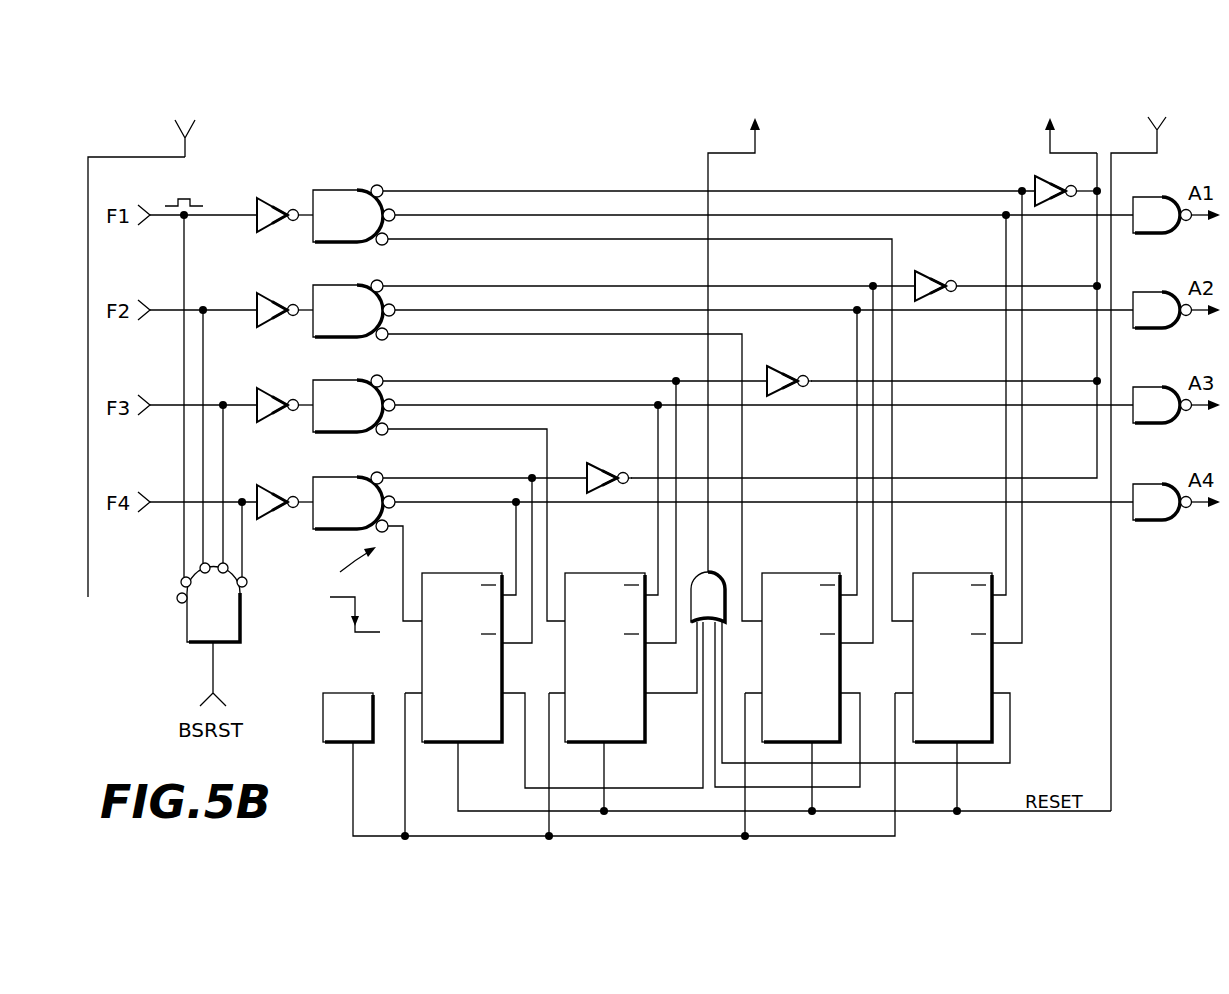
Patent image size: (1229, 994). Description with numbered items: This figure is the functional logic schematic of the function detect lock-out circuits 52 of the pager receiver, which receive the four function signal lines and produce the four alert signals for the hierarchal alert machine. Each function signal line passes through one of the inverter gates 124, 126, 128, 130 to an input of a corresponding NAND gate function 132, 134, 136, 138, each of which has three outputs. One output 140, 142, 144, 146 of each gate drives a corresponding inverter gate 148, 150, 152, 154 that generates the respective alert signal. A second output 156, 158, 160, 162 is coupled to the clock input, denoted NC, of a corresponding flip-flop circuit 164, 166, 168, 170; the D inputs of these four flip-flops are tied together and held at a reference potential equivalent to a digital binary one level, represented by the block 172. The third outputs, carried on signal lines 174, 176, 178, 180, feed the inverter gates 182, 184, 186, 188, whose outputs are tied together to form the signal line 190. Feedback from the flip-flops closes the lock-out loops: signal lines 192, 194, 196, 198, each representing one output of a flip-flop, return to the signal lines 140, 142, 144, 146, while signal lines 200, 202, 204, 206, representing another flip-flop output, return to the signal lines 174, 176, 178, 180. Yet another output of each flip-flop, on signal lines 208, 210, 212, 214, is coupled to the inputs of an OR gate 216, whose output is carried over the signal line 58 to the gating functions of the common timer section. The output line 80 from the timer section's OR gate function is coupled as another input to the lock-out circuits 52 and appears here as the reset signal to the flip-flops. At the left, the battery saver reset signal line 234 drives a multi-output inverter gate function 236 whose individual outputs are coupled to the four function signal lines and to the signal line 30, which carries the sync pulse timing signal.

The signal line 30 is at (190, 140).
The function detect lock-out circuits 52 is at (342, 567).
The signal line 58 is at (758, 151).
The output line 80 is at (1057, 812).
The inverter gate 124 is at (279, 198).
The inverter gate 126 is at (279, 293).
The inverter gate 128 is at (279, 390).
The inverter gate 130 is at (283, 485).
The NAND gate function 132 is at (354, 215).
The NAND gate function 134 is at (354, 310).
The NAND gate function 136 is at (354, 405).
The NAND gate function 138 is at (354, 502).
The output 140 is at (424, 215).
The output 142 is at (450, 310).
The output 144 is at (491, 405).
The output 146 is at (441, 503).
The inverter gate 148 is at (1176, 215).
The inverter gate 150 is at (1176, 310).
The inverter gate 152 is at (1176, 405).
The inverter gate 154 is at (1176, 502).
The output 156 is at (431, 240).
The output 158 is at (451, 335).
The output 160 is at (496, 430).
The output 162 is at (401, 560).
The flip-flop circuit 164 is at (952, 657).
The flip-flop circuit 166 is at (801, 657).
The flip-flop circuit 168 is at (605, 657).
The flip-flop circuit 170 is at (462, 657).
The block 172 is at (368, 692).
The signal line 174 is at (424, 191).
The signal line 176 is at (450, 286).
The signal line 178 is at (491, 382).
The signal line 180 is at (400, 478).
The inverter gate 182 is at (1033, 180).
The inverter gate 184 is at (920, 281).
The inverter gate 186 is at (770, 369).
The inverter gate 188 is at (588, 470).
The signal line 190 is at (1055, 151).
The signal line 192 is at (1006, 521).
The signal line 194 is at (857, 523).
The signal line 196 is at (657, 531).
The signal line 198 is at (512, 531).
The signal line 200 is at (1025, 586).
The signal line 202 is at (852, 646).
The signal line 204 is at (650, 646).
The signal line 206 is at (535, 645).
The signal line 208 is at (1010, 692).
The signal line 210 is at (848, 692).
The signal line 212 is at (655, 696).
The signal line 214 is at (525, 768).
The OR gate 216 is at (712, 597).
The signal line 234 is at (215, 672).
The multi-output inverter gate function 236 is at (243, 603).